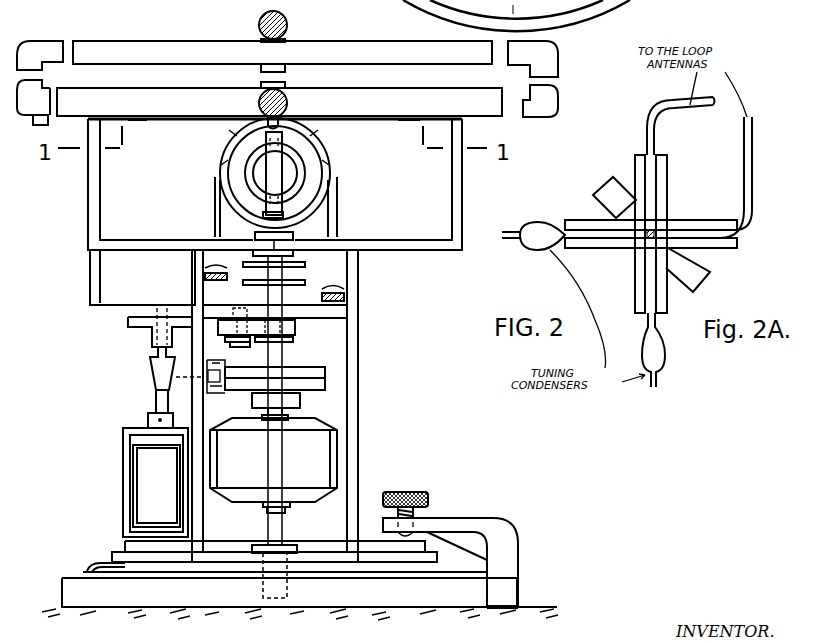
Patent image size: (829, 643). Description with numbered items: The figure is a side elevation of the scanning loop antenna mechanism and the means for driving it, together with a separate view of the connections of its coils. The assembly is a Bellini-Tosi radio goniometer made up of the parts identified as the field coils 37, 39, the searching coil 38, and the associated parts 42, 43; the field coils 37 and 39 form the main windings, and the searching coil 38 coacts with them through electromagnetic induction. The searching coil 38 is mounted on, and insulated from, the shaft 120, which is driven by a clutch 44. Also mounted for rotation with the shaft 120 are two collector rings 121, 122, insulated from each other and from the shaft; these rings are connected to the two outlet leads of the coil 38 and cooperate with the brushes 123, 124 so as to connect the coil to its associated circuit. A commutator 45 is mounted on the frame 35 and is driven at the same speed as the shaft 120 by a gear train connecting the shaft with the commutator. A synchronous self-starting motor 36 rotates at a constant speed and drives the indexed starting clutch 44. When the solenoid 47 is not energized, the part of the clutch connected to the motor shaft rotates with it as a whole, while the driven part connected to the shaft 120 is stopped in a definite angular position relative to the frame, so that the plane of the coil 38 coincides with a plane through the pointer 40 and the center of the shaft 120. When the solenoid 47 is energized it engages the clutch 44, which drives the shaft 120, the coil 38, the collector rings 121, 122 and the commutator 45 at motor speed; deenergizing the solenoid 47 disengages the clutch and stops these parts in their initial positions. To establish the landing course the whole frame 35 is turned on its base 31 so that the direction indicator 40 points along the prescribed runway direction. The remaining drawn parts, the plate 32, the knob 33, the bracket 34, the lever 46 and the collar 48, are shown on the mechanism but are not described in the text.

In FIG. 2, the base 31 is at (472, 593).
In FIG. 2, the plate 32 is at (470, 577).
In FIG. 2, the thumb screw knob 33 is at (428, 496).
In FIG. 2, the bracket 34 is at (498, 527).
In FIG. 2, the frame 35 is at (520, 126).
In FIG. 2, the synchronous self-starting motor 36 is at (327, 447).
In FIG. 2, the field coil 37 is at (268, 183).
In FIG. 2A, the field coil 37 is at (674, 183).
In FIG. 2, the searching coil 38 is at (248, 165).
In FIG. 2A, the searching coil 38 is at (712, 270).
In FIG. 2, the field coil 39 is at (233, 148).
In FIG. 2A, the field coil 39 is at (623, 249).
In FIG. 2, the pointer 40 is at (87, 567).
In FIG. 2, the goniometer part 42 is at (288, 24).
In FIG. 2, the goniometer part 43 is at (523, 60).
In FIG. 2, the clutch 44 is at (328, 377).
In FIG. 2, the commutator 45 is at (212, 350).
In FIG. 2, the pointer lever 46 is at (155, 375).
In FIG. 2, the solenoid 47 is at (142, 437).
In FIG. 2, the collar 48 is at (302, 400).
In FIG. 2, the shaft 120 is at (268, 295).
In FIG. 2, the collector ring 121 is at (306, 264).
In FIG. 2, the collector ring 122 is at (245, 282).
In FIG. 2, the brush 123 is at (236, 258).
In FIG. 2, the brush 124 is at (312, 282).